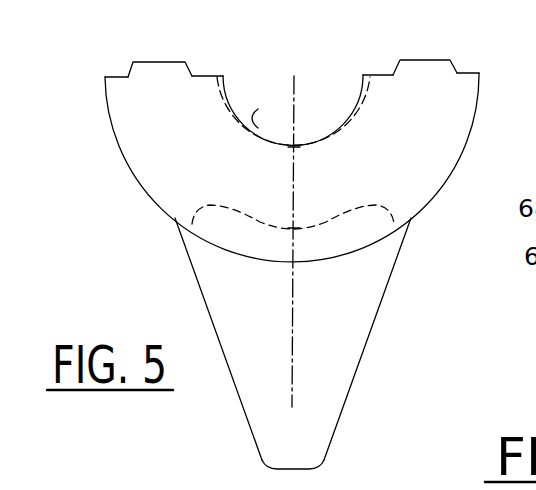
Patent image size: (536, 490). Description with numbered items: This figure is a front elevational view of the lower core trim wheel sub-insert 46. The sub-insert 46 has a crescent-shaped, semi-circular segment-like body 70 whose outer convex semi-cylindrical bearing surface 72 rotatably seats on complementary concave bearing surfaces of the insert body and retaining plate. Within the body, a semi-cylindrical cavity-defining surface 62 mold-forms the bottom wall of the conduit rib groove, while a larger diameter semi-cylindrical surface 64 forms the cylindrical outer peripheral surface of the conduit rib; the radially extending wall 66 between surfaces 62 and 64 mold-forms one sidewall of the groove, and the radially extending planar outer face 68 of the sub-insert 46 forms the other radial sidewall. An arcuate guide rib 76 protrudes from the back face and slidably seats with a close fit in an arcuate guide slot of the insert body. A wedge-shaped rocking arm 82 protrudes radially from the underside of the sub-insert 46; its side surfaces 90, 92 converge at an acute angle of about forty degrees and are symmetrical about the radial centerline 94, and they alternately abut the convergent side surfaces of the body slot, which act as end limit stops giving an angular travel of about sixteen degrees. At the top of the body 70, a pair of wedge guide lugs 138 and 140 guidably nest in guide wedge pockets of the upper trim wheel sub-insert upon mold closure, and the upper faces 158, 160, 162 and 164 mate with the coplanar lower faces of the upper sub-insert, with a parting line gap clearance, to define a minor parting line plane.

The sub-insert 46 is at (270, 167).
The semi-cylindrical cavity-defining surface 62 is at (338, 127).
The larger diameter semi-cylindrical surface 64 is at (245, 95).
The radially extending wall 66 is at (256, 142).
The radially extending planar outer face 68 is at (433, 117).
The semi-circular segment-like body 70 is at (462, 148).
The outer convex semi-cylindrical bearing surface 72 is at (436, 194).
The arcuate guide rib 76 is at (345, 216).
The rocking arm 82 is at (284, 343).
The side surface of rocking arm 90 is at (201, 295).
The side surface of rocking arm 92 is at (379, 317).
The radial centerline 94 is at (294, 322).
The wedge guide lug 138 is at (163, 61).
The wedge guide lug 140 is at (430, 56).
The upper face 158 is at (473, 73).
The upper face 160 is at (385, 73).
The upper face 162 is at (211, 74).
The upper face 164 is at (120, 76).